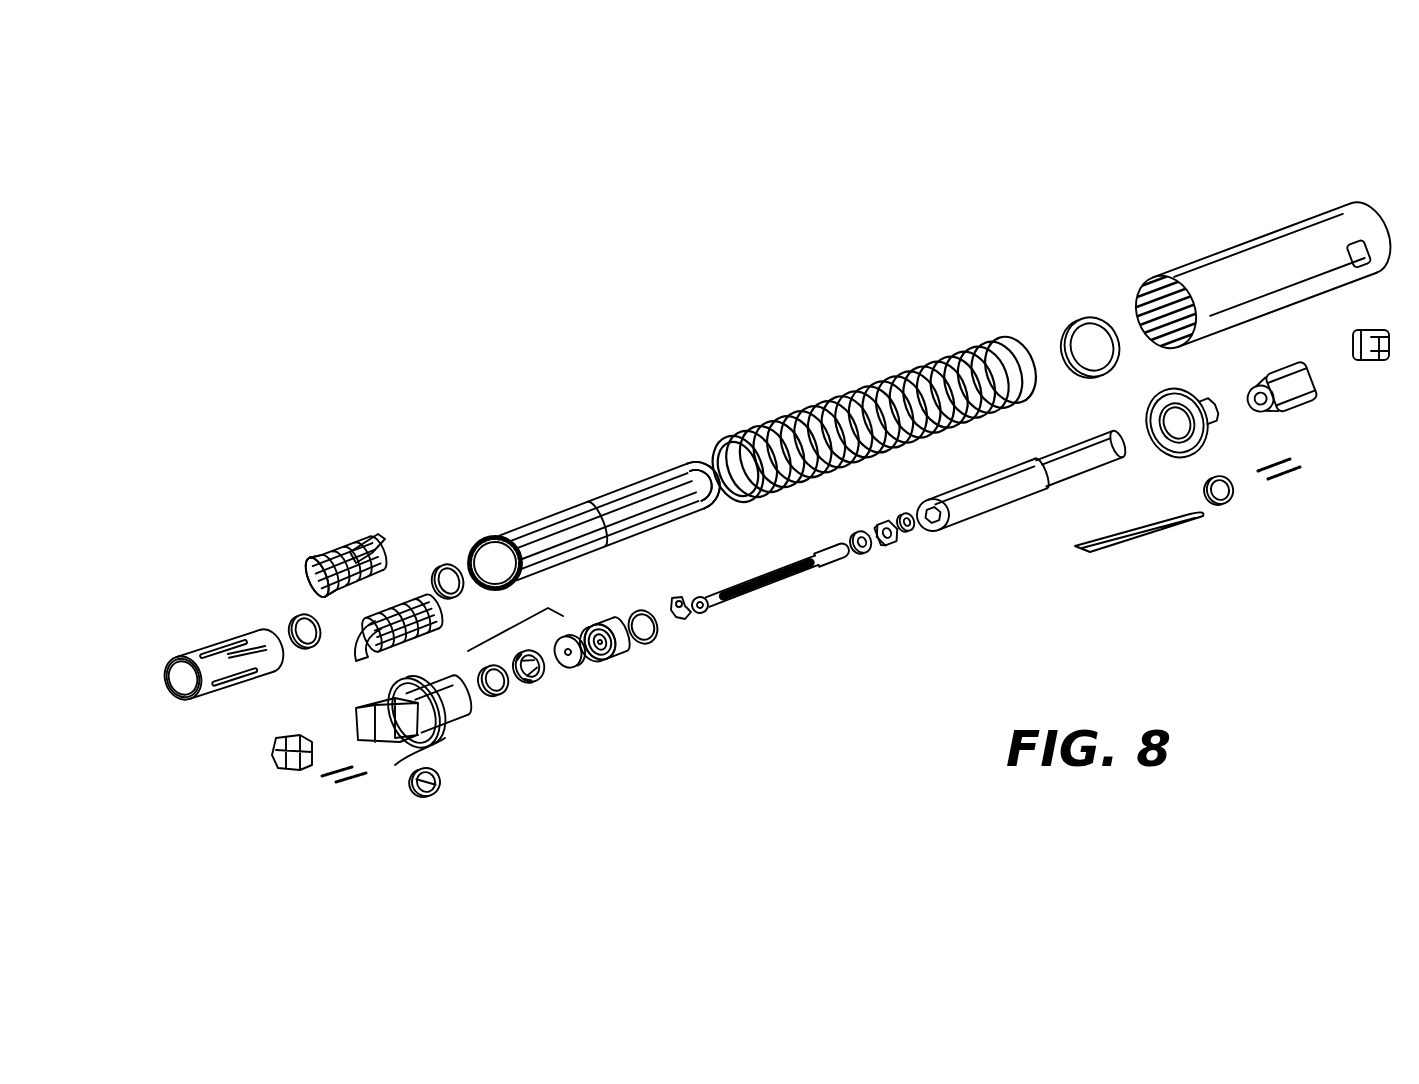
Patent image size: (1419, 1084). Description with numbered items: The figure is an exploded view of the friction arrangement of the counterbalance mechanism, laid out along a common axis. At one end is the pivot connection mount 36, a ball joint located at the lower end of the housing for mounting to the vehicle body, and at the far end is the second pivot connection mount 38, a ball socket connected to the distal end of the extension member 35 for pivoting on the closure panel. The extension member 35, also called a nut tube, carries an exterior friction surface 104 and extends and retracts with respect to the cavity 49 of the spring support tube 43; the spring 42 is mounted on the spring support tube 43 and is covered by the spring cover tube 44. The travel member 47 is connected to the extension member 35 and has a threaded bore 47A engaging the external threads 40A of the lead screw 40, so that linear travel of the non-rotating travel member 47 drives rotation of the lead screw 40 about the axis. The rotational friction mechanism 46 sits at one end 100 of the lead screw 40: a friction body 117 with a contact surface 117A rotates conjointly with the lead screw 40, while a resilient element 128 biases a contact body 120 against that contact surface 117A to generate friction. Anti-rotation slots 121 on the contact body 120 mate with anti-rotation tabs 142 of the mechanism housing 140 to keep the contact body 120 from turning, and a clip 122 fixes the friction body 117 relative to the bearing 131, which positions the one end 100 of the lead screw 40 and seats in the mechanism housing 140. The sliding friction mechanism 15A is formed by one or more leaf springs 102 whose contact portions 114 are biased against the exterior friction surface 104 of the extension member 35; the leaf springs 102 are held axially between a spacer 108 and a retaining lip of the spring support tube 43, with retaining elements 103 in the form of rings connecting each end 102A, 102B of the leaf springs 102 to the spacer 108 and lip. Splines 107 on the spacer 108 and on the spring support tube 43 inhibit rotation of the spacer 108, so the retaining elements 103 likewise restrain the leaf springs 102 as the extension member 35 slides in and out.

The sliding friction mechanism 15A is at (268, 418).
The extension member 35 is at (1047, 498).
The pivot connection mount 36 is at (350, 713).
The second pivot connection mount 38 is at (1316, 394).
The lead screw 40 is at (770, 590).
The external threads 40A is at (830, 552).
The spring 42 is at (878, 380).
The spring support tube 43 is at (623, 488).
The spring cover tube 44 is at (1227, 245).
The rotational friction mechanism 46 is at (505, 631).
The travel member 47 is at (880, 516).
The threaded bore 47A is at (905, 542).
The cavity 49 is at (494, 548).
The one end of the lead screw 100 is at (688, 630).
The leaf spring 102 is at (365, 514).
The end of resilient friction element 102A is at (301, 569).
The end of resilient friction element 102B is at (398, 532).
The retaining element 103 is at (297, 606).
The exterior friction surface 104 is at (1040, 450).
The splines 107 is at (185, 651).
The spacer 108 is at (216, 641).
The contact portion 114 is at (357, 614).
The friction body 117 is at (580, 668).
The contact surface 117A is at (555, 665).
The contact body 120 is at (529, 687).
The anti-rotation slots 121 is at (518, 657).
The clip 122 is at (645, 608).
The resilient element 128 is at (486, 702).
The bearing 131 is at (625, 653).
The mechanism housing 140 is at (360, 773).
The anti-rotation tabs 142 is at (400, 677).